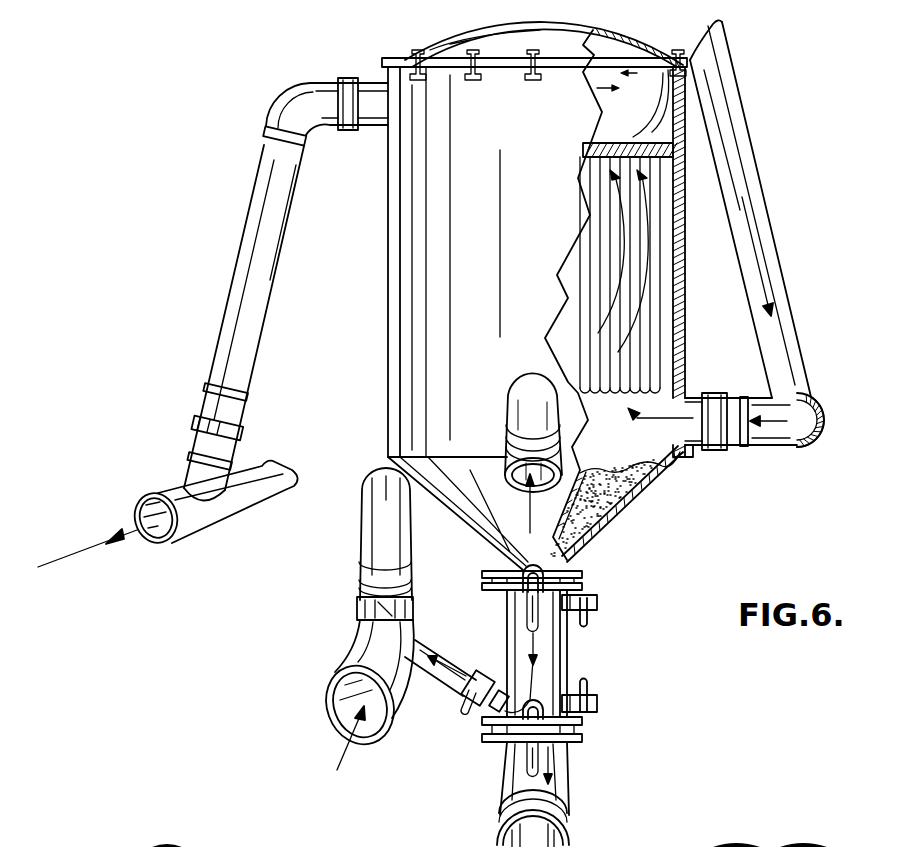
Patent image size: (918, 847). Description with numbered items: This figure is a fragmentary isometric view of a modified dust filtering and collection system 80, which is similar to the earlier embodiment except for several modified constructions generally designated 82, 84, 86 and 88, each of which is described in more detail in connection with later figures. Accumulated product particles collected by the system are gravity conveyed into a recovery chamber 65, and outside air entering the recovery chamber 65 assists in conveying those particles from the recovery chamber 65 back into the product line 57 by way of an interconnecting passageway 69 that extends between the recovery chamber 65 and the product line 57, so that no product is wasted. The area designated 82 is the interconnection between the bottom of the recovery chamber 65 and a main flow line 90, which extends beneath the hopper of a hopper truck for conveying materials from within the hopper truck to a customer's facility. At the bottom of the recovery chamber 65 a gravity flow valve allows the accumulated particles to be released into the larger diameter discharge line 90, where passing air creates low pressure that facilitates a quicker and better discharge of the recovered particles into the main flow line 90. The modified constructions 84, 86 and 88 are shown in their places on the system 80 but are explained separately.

The product line 57 is at (382, 520).
The recovery chamber 65 is at (553, 670).
The interconnecting passageway 69 is at (470, 676).
The dust filtering and collection system 80 is at (300, 64).
The modified construction area 82 is at (575, 788).
The modified construction 84 is at (331, 647).
The modified construction 86 is at (661, 133).
The modified construction 88 is at (611, 25).
The main flow line 90 is at (566, 821).